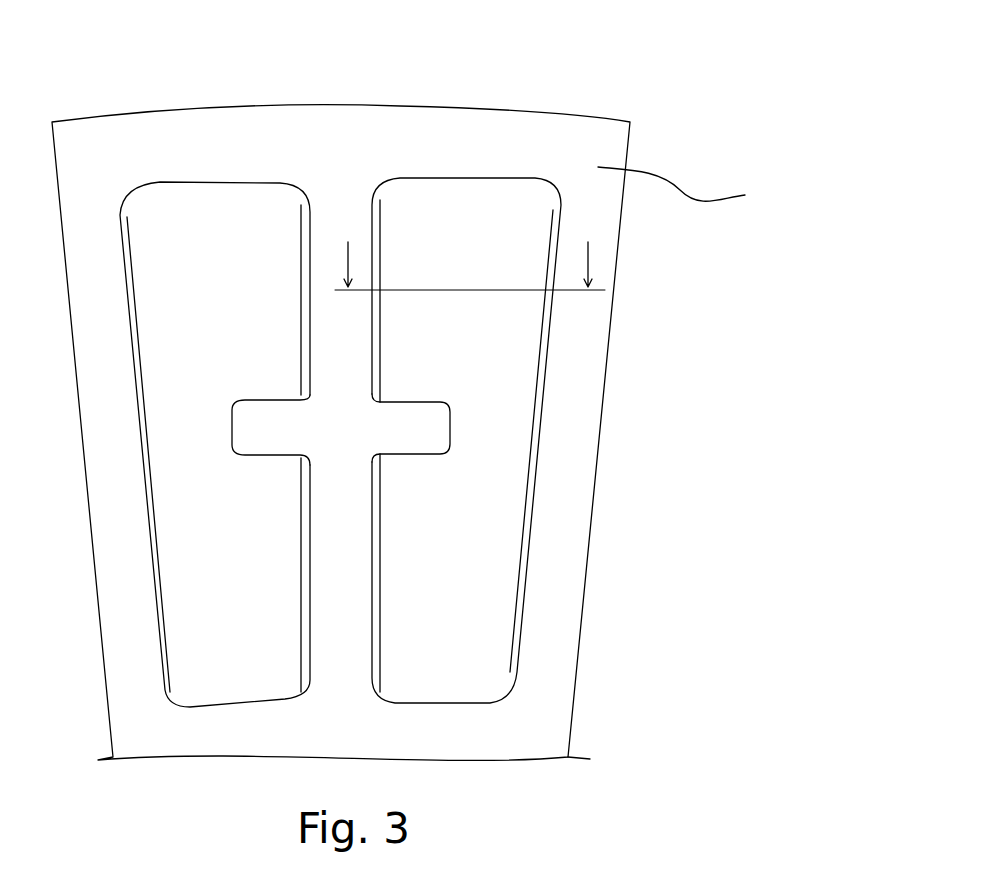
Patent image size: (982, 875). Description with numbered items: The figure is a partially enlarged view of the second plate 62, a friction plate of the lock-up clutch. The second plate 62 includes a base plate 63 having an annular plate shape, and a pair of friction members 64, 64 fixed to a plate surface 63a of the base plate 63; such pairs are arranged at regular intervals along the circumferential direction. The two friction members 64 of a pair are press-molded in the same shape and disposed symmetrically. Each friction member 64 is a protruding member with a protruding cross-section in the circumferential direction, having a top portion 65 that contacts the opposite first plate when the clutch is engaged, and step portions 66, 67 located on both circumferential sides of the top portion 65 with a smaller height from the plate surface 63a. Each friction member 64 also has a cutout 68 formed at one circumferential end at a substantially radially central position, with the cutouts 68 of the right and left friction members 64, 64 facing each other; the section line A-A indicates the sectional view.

The second plate 62 is at (654, 60).
The base plate 63 is at (588, 109).
The plate surface 63a is at (690, 185).
The friction member 64 is at (465, 160).
The top portion 65 is at (551, 440).
The step portion 66 is at (382, 620).
The step portion 67 is at (530, 528).
The cutout 68 is at (423, 422).